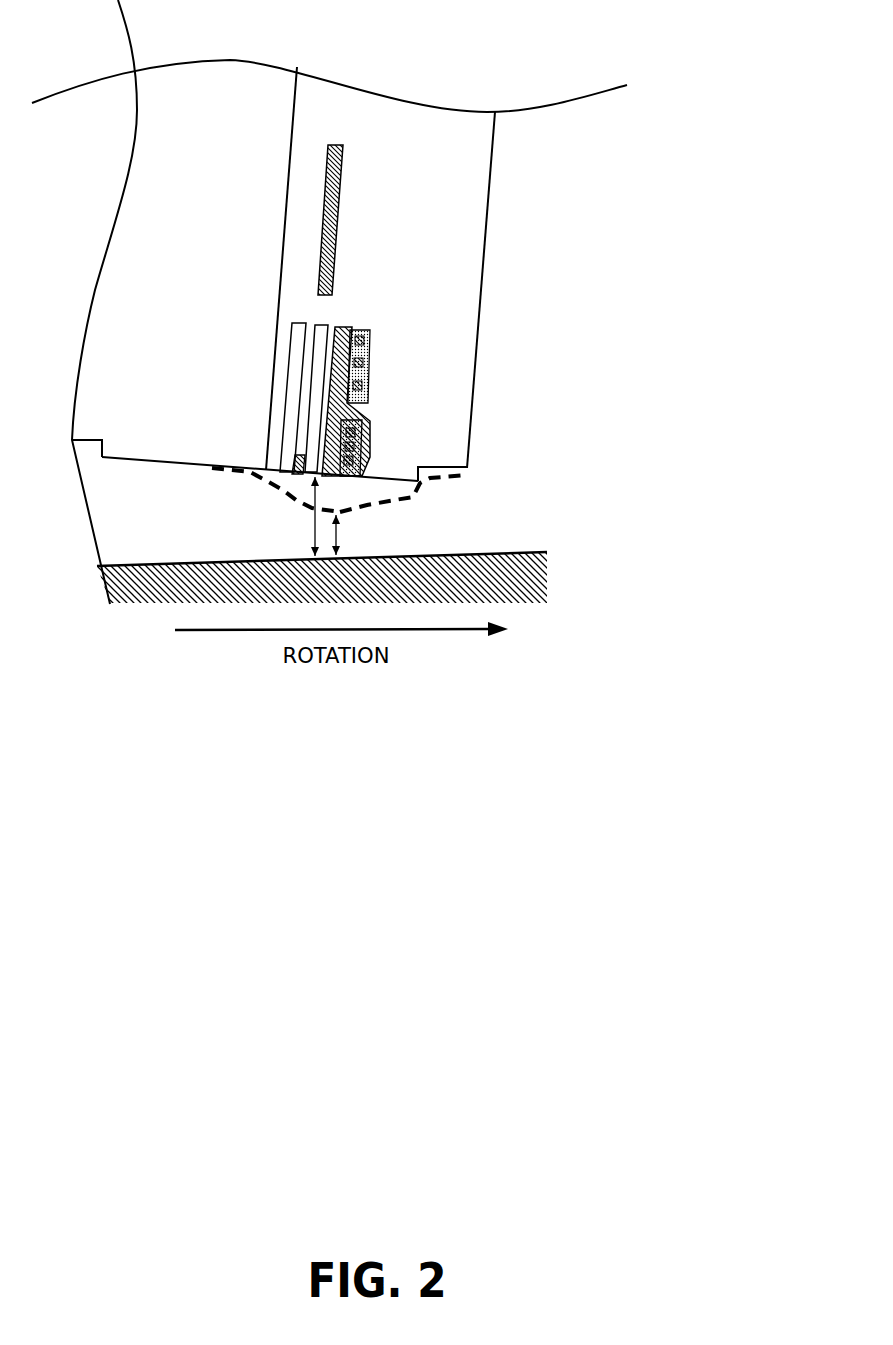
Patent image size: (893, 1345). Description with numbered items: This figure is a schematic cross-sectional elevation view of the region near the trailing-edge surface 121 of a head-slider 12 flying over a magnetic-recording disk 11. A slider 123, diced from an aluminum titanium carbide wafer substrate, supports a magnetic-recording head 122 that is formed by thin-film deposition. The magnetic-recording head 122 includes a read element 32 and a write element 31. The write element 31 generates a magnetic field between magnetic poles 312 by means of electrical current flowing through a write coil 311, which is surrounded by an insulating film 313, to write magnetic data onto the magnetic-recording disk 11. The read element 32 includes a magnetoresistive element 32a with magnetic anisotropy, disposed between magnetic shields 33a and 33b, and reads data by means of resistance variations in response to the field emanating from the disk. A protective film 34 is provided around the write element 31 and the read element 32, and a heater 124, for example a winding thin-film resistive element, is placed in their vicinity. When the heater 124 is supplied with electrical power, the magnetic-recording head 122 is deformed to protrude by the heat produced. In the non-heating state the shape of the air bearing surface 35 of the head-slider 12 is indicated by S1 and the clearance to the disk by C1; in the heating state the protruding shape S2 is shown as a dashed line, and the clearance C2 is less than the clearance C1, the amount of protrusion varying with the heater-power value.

The magnetic-recording disk 11 is at (530, 552).
The head-slider 12 is at (358, 61).
The trailing-edge surface 121 is at (491, 185).
The magnetic-recording head 122 is at (525, 294).
The slider 123 is at (75, 450).
The heater 124 is at (337, 230).
The write element 31 is at (380, 417).
The write coil 311 is at (370, 335).
The magnetic poles 312 is at (368, 435).
The insulating film 313 is at (368, 370).
The read element 32 is at (240, 507).
The magnetoresistive element 32a is at (297, 485).
The magnetic shield 33a is at (322, 323).
The magnetic shield 33b is at (291, 340).
The protective film 34 is at (296, 147).
The air bearing surface 35 is at (128, 460).
The non-heating ABS shape S1 is at (248, 473).
The protruding shape S2 is at (397, 503).
The non-heating clearance C1 is at (299, 516).
The heating clearance C2 is at (357, 535).